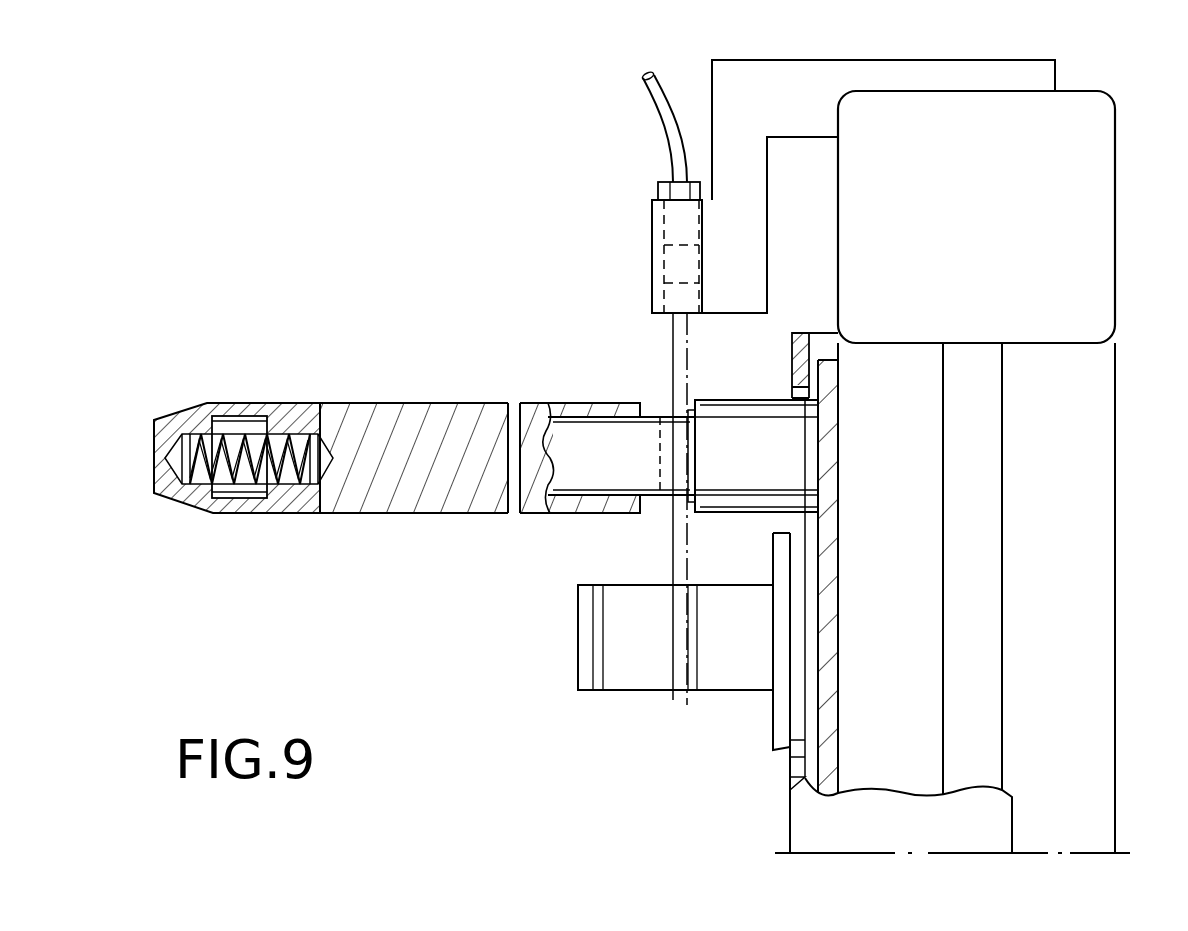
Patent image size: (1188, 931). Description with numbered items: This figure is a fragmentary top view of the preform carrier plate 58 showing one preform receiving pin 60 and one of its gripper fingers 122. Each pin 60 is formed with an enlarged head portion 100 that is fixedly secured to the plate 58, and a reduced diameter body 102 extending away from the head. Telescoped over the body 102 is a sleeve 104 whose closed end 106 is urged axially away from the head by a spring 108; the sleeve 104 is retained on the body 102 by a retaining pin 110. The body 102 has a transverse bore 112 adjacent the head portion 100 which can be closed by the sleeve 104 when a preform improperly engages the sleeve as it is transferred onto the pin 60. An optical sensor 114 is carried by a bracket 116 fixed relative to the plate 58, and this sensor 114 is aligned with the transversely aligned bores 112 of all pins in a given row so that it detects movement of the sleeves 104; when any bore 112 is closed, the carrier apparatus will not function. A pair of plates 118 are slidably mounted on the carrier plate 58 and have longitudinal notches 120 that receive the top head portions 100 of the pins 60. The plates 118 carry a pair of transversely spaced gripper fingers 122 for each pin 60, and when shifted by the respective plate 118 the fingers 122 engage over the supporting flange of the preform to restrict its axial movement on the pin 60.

The preform carrier plate 58 is at (828, 622).
The pin 60 is at (731, 400).
The enlarged head portion 100 is at (727, 496).
The reduced diameter body 102 is at (408, 472).
The sleeve 104 is at (436, 403).
The closed end 106 is at (200, 408).
The spring 108 is at (288, 416).
The retaining pin 110 is at (524, 403).
The transverse bore 112 is at (665, 498).
The optical sensor 114 is at (670, 255).
The bracket 116 is at (807, 78).
The plate 118 is at (791, 779).
The longitudinal notch 120 is at (793, 742).
The gripper finger 122 is at (722, 690).